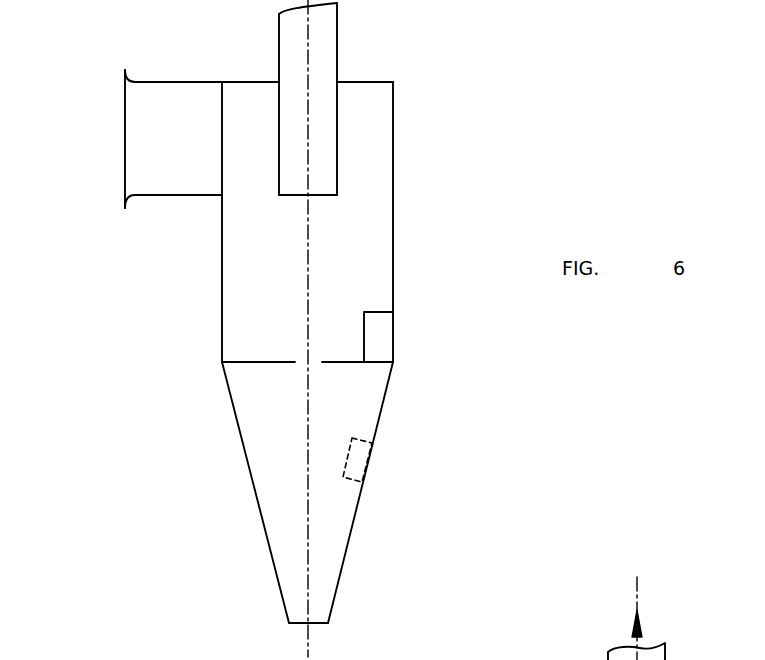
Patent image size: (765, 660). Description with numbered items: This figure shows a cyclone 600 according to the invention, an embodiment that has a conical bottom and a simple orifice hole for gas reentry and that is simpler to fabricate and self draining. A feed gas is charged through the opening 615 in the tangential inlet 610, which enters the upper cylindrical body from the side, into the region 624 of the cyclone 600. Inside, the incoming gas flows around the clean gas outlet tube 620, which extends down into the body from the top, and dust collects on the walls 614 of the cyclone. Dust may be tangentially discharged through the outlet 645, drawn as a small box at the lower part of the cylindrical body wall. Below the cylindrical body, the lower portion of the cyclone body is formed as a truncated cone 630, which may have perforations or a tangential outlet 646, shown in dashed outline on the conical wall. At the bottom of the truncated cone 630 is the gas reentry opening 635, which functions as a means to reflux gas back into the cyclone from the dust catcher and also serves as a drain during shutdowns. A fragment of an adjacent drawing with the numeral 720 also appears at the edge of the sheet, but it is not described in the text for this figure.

In FIG. 6, the cyclone 600 is at (410, 180).
In FIG. 6, the tangential inlet 610 is at (182, 195).
In FIG. 6, the walls 614 is at (393, 242).
In FIG. 6, the opening 615 is at (125, 133).
In FIG. 6, the clean gas outlet tube 620 is at (337, 33).
In FIG. 6, the region 624 is at (386, 167).
In FIG. 6, the truncated cone 630 is at (250, 472).
In FIG. 6, the gas reentry opening 635 is at (297, 623).
In FIG. 6, the outlet 645 is at (383, 330).
In FIG. 6, the tangential outlet 646 is at (363, 452).
In FIG. 7, the axis arrow 720 is at (722, 659).